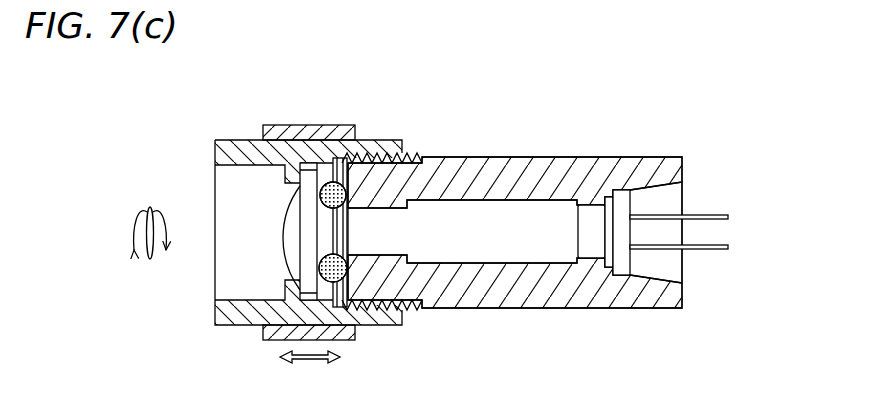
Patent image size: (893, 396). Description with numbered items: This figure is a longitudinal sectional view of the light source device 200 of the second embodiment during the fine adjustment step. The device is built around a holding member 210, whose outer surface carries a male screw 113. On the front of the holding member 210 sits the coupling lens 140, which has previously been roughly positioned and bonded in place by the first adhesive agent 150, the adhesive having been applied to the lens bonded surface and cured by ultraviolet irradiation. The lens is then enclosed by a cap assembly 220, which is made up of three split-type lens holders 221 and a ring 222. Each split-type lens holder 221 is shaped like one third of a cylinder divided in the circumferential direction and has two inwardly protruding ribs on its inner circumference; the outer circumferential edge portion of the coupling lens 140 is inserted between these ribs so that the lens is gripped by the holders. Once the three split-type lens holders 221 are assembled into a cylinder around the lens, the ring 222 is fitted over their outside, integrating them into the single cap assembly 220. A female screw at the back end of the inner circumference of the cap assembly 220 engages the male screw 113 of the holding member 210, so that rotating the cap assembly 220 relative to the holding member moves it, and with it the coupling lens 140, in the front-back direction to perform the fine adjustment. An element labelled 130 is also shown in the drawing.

The light source device 200 is at (543, 90).
The holding member 210 is at (564, 156).
The cap assembly 220 is at (330, 112).
The split-type lens holder 221 is at (240, 146).
The ring 222 is at (279, 131).
The male screw 113 is at (405, 157).
The semiconductor laser 130 is at (632, 200).
The coupling lens 140 is at (283, 247).
The first adhesive agent 150 is at (336, 279).